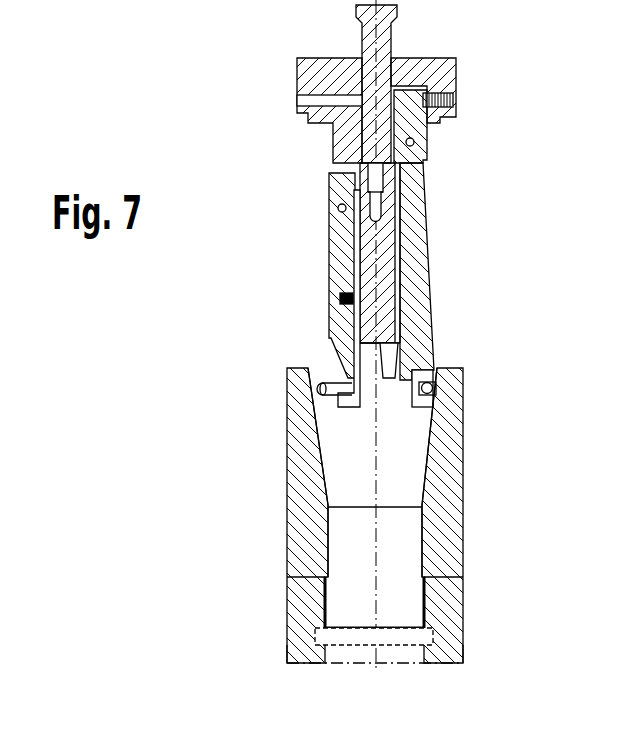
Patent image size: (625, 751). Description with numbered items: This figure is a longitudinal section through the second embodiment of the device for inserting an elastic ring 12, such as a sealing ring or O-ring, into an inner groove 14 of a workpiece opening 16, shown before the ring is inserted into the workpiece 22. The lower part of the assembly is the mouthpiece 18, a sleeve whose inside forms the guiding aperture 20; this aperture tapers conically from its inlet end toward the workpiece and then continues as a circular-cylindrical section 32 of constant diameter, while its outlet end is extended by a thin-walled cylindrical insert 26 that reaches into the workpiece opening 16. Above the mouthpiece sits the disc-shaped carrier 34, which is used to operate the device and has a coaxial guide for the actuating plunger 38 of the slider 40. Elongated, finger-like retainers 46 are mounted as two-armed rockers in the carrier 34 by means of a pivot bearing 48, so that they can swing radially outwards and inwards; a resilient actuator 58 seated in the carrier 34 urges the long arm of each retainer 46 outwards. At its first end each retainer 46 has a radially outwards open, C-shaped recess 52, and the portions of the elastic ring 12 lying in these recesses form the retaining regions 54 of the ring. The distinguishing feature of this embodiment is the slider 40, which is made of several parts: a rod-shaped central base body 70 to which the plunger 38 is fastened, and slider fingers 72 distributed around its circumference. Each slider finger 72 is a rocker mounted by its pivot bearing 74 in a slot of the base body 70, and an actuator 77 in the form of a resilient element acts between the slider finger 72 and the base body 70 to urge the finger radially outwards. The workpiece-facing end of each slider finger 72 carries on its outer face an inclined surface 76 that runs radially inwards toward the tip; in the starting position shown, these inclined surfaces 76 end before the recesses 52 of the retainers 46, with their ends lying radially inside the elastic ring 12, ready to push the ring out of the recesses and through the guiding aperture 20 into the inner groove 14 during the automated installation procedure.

The elastic ring 12 is at (318, 387).
The inner groove 14 is at (430, 633).
The workpiece opening 16 is at (330, 655).
The mouthpiece 18 is at (461, 490).
The guiding aperture 20 is at (330, 487).
The workpiece 22 is at (461, 645).
The cylindrical insert 26 is at (422, 606).
The circular-cylindrical section 32 is at (410, 556).
The carrier 34 is at (307, 78).
The actuating plunger 38 is at (392, 30).
The slider 40 is at (284, 225).
The retainer 46 is at (423, 279).
The pivot bearing 48 is at (415, 141).
The recess 52 is at (433, 385).
The retaining region 54 is at (433, 389).
The resilient actuator 58 is at (452, 97).
The base body 70 is at (388, 245).
The slider finger 72 is at (333, 313).
The pivot bearing 74 is at (338, 207).
The inclined surface 76 is at (333, 353).
The actuator 77 is at (342, 297).